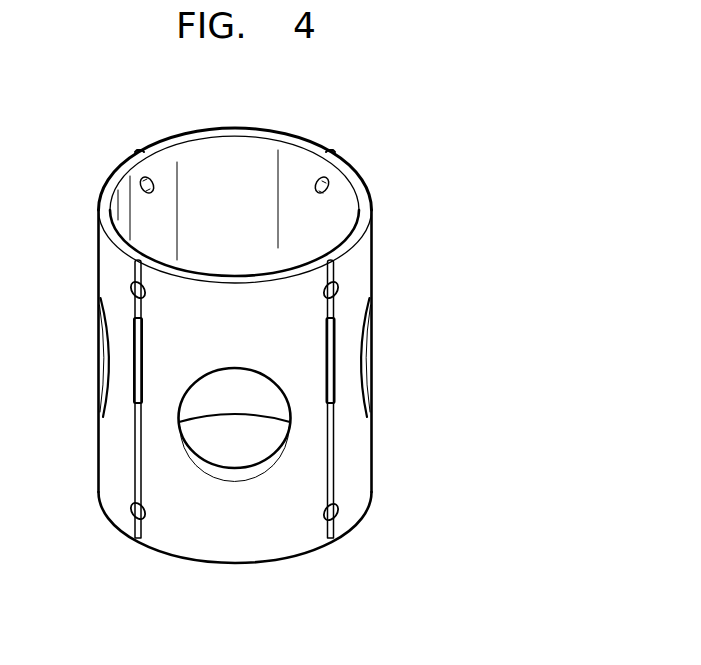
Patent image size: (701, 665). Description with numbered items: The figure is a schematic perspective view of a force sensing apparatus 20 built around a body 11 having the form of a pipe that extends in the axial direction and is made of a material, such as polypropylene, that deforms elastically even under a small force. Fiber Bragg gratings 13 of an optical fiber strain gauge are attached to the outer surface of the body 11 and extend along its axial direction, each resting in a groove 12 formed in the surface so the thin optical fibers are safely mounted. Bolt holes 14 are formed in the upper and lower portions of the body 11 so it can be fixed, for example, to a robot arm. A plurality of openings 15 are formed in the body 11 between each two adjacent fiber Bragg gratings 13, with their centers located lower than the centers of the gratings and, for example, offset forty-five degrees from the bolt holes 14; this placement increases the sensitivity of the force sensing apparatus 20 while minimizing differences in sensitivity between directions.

The force sensing apparatus 20 is at (382, 145).
The body 11 is at (363, 443).
The groove 12 is at (336, 272).
The fiber Bragg gratings 13 is at (335, 357).
The bolt holes 14 is at (338, 514).
The openings 15 is at (237, 452).